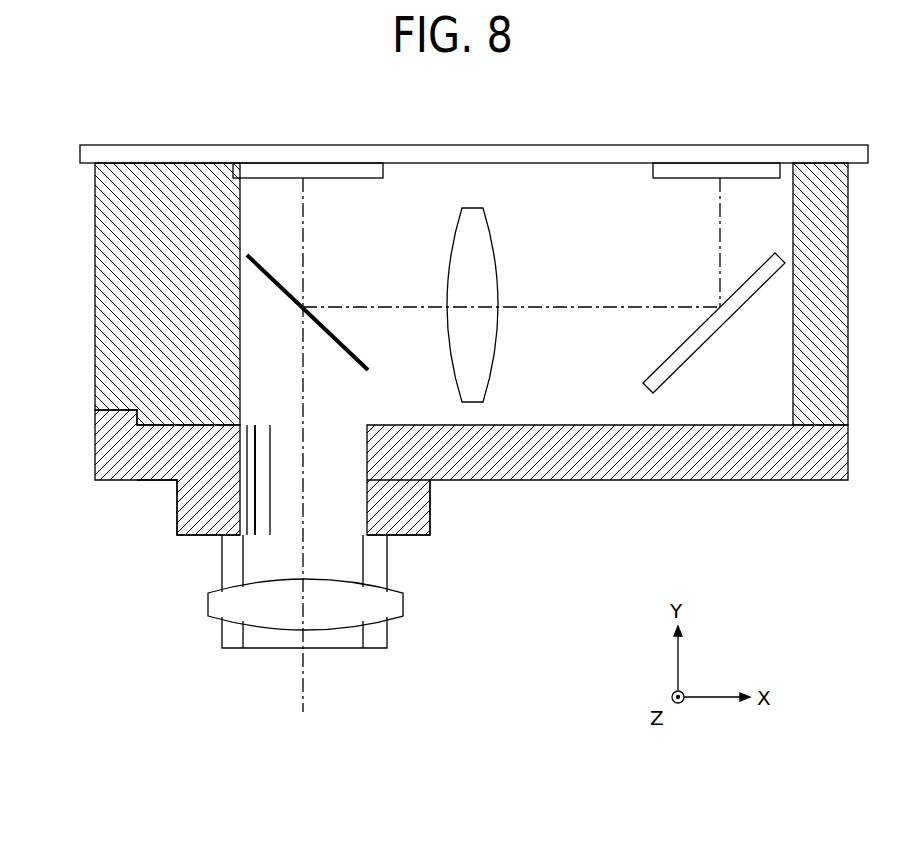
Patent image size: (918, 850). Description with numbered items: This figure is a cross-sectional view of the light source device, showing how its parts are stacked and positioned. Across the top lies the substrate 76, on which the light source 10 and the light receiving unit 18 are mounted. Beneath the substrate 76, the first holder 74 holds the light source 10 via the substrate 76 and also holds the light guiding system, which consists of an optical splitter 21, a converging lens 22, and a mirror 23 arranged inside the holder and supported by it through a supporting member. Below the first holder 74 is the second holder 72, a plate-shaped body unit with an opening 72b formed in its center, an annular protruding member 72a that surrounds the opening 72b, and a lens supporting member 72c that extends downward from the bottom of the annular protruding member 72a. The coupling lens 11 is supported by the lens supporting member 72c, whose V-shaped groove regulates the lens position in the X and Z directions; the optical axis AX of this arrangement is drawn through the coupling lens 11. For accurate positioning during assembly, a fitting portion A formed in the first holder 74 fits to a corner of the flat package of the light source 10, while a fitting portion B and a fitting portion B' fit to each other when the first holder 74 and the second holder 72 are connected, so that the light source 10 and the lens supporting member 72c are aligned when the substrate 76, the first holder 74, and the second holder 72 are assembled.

The light source 10 is at (348, 172).
The coupling lens 11 is at (405, 603).
The light receiving unit 18 is at (732, 170).
The optical splitter 21 is at (358, 353).
The converging lens 22 is at (493, 242).
The mirror 23 is at (692, 358).
The second holder 72 is at (113, 491).
The annular protruding member 72a is at (176, 520).
The opening 72b is at (361, 486).
The lens supporting member 72c is at (220, 632).
The first holder 74 is at (95, 258).
The substrate 76 is at (824, 143).
The fitting portion A is at (240, 160).
The fitting portion B is at (80, 442).
The fitting portion B' is at (88, 376).
The optical axis AX is at (304, 460).